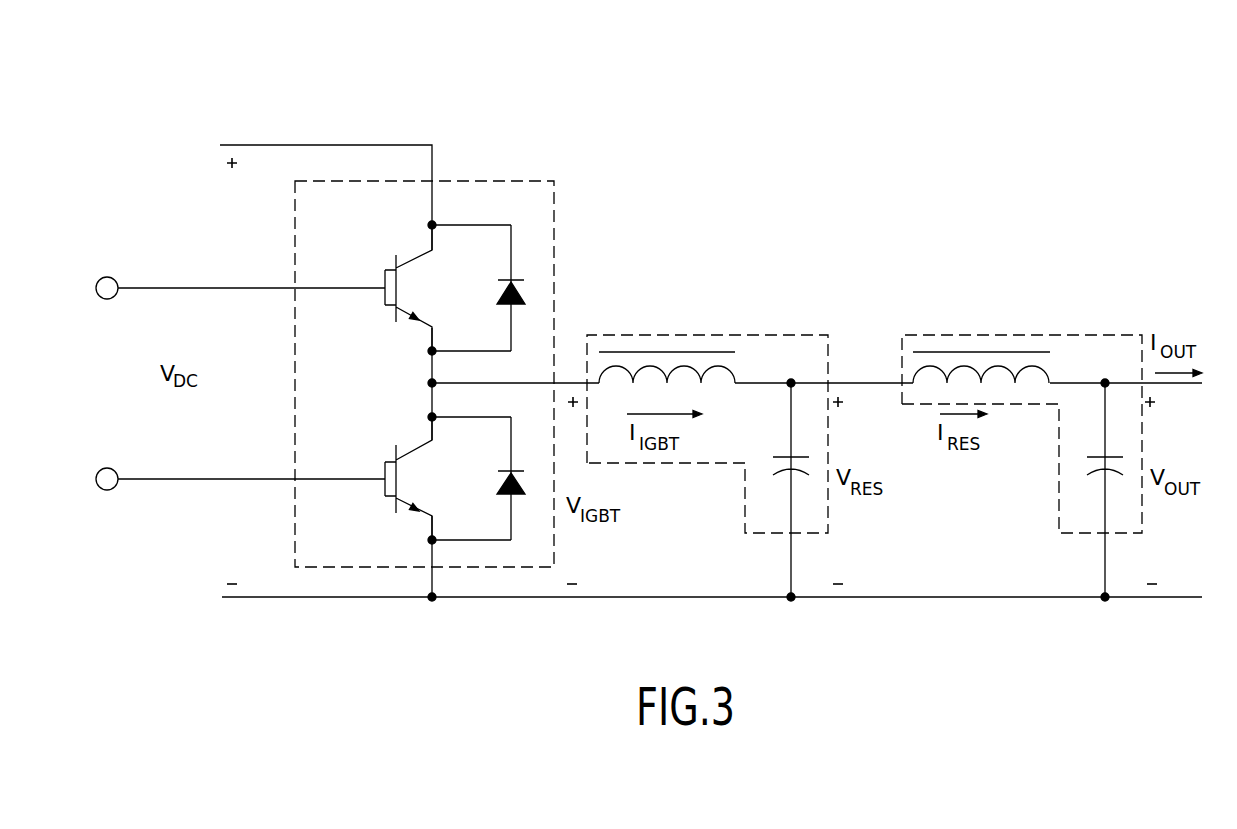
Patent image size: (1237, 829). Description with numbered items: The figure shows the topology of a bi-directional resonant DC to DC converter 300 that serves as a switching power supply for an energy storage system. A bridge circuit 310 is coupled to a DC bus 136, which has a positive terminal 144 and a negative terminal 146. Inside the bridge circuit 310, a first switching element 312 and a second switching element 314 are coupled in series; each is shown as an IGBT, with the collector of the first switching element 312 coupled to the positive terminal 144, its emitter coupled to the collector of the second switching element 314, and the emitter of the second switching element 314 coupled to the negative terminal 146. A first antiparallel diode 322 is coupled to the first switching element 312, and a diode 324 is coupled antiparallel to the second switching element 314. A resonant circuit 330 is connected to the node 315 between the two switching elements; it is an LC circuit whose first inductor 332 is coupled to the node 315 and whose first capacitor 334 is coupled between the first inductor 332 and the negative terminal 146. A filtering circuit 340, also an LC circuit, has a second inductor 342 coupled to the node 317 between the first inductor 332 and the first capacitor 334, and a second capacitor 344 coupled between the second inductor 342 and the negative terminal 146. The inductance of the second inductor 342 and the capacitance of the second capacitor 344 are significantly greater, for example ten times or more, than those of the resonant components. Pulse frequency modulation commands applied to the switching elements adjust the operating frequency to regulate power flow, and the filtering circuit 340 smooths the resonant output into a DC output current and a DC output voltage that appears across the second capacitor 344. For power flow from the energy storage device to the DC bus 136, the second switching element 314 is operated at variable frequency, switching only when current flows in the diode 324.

The DC bus 136 is at (263, 145).
The positive terminal 144 is at (360, 145).
The negative terminal 146 is at (323, 597).
The bi-directional resonant DC to DC converter 300 is at (925, 122).
The bridge circuit 310 is at (505, 181).
The first switching element 312 is at (385, 270).
The second switching element 314 is at (385, 462).
The node 315 is at (432, 383).
The node 317 is at (791, 383).
The first antiparallel diode 322 is at (511, 250).
The diode 324 is at (511, 471).
The resonant circuit 330 is at (615, 335).
The first inductor 332 is at (699, 352).
The first capacitor 334 is at (775, 474).
The filtering circuit 340 is at (928, 335).
The second inductor 342 is at (997, 352).
The second capacitor 344 is at (1089, 474).